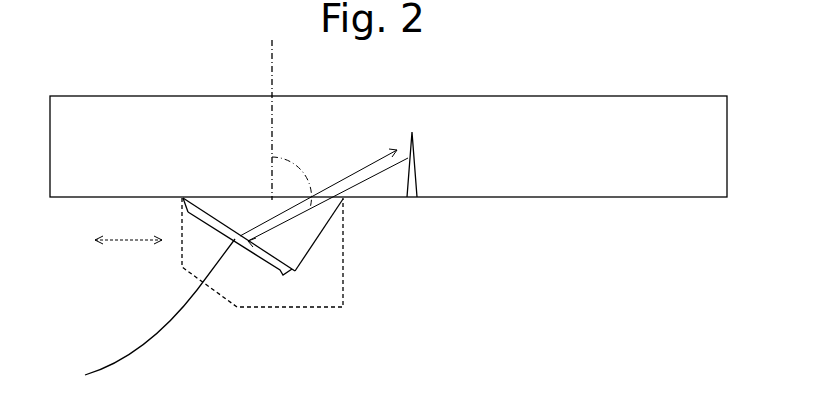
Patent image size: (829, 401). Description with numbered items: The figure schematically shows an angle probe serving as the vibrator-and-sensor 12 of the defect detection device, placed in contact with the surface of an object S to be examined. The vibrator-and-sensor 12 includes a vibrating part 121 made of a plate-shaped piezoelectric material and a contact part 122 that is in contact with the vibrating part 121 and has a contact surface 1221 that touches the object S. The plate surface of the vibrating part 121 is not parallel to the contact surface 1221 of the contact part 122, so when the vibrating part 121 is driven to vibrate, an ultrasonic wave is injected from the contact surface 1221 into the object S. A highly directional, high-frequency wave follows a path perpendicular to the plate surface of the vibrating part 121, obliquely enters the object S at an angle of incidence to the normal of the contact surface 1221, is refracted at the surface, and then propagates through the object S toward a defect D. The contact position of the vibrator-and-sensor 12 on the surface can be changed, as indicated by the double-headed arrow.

The object to be examined S is at (675, 149).
The defect D is at (420, 195).
The vibrator-and-sensor 12 is at (353, 318).
The vibrating part 121 is at (265, 257).
The contact part 122 is at (297, 238).
The contact surface 1221 is at (310, 208).